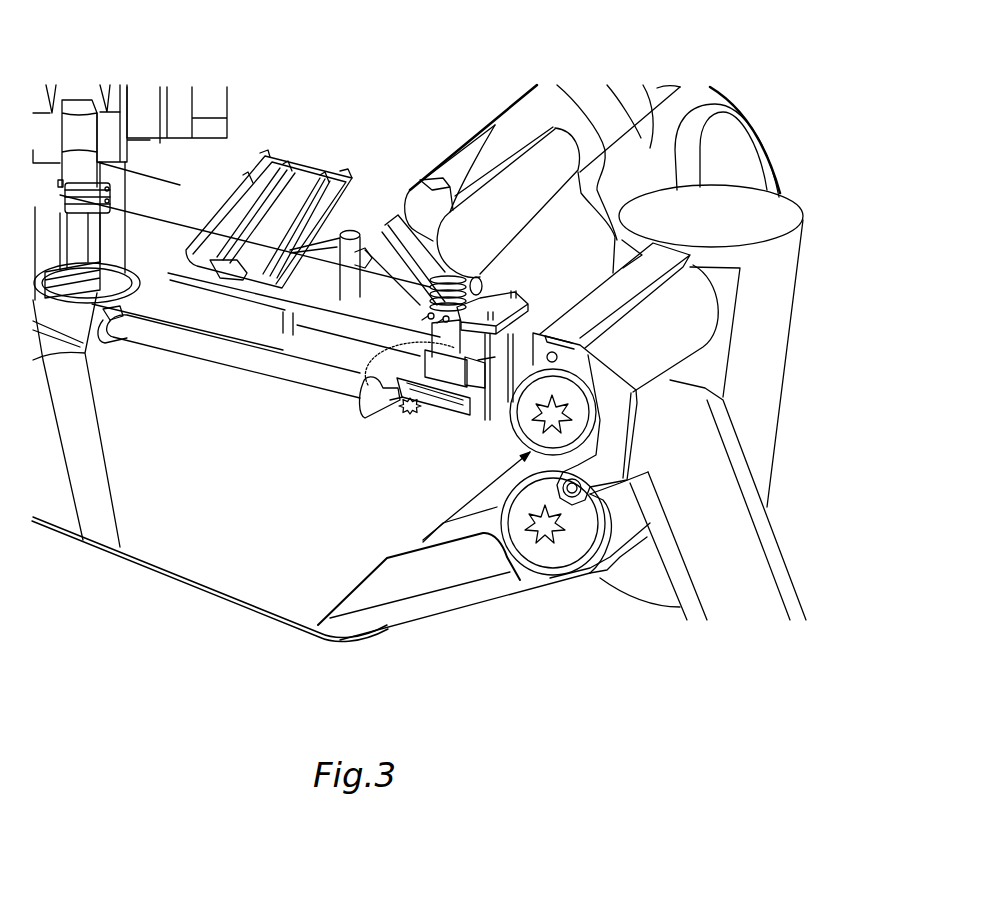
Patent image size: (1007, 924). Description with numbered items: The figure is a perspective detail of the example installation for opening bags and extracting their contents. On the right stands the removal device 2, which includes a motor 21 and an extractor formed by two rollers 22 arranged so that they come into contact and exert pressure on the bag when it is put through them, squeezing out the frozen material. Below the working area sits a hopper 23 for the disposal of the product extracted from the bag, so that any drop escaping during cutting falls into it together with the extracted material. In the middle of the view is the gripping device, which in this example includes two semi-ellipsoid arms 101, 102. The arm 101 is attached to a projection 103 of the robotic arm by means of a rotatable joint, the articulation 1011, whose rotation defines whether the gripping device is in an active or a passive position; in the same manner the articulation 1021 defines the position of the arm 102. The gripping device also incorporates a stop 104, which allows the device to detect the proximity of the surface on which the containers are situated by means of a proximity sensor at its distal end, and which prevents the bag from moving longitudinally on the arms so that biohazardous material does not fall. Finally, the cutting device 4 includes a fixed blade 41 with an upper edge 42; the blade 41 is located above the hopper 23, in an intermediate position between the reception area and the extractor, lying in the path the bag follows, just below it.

The removal device 2 is at (805, 298).
The motor 21 is at (747, 207).
The rollers 22 is at (688, 346).
The hopper 23 is at (187, 587).
The cutting device 4 is at (245, 428).
The fixed blade 41 is at (390, 400).
The upper edge 42 is at (373, 383).
The semi-ellipsoid arm 101 is at (507, 548).
The semi-ellipsoid arm 102 is at (420, 357).
The articulation 1011 is at (448, 403).
The articulation 1021 is at (353, 381).
The projection 103 is at (458, 333).
The stop 104 is at (517, 347).